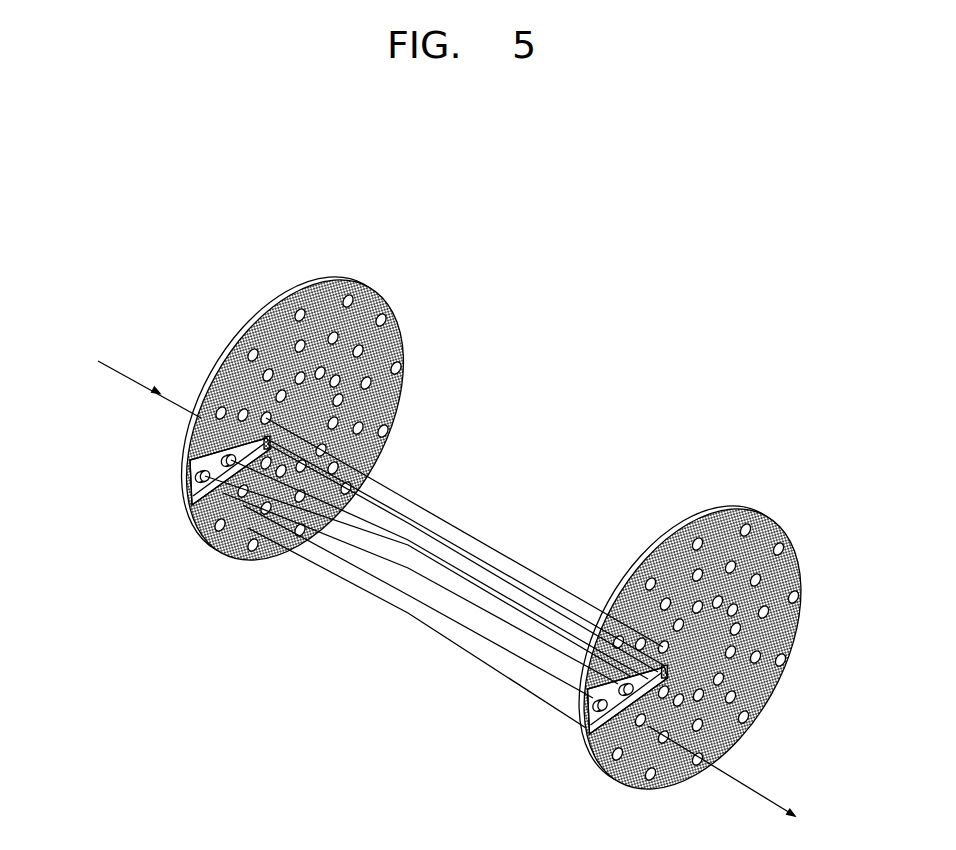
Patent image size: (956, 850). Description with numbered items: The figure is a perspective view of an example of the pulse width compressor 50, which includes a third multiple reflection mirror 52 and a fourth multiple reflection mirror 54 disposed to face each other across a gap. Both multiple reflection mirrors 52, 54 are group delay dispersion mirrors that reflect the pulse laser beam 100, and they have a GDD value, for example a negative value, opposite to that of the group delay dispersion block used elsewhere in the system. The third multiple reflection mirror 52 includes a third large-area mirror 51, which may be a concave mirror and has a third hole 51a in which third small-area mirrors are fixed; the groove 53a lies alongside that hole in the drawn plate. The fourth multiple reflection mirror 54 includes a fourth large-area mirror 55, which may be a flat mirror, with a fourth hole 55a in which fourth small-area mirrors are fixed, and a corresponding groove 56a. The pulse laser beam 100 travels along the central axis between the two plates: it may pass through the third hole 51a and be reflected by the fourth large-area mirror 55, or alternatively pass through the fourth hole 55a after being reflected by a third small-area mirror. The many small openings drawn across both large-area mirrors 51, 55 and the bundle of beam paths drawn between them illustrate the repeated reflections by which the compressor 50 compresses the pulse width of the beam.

The pulse laser beam 100 is at (122, 368).
The pulse width compressor 50 is at (453, 542).
The third large-area mirror 51 is at (213, 535).
The third hole 51a is at (176, 463).
The third multiple reflection mirror 52 is at (254, 429).
The first guide groove 53a is at (183, 470).
The fourth multiple reflection mirror 54 is at (632, 657).
The fourth large-area mirror 55 is at (600, 765).
The fourth hole 55a is at (572, 695).
The second guide groove 56a is at (580, 715).